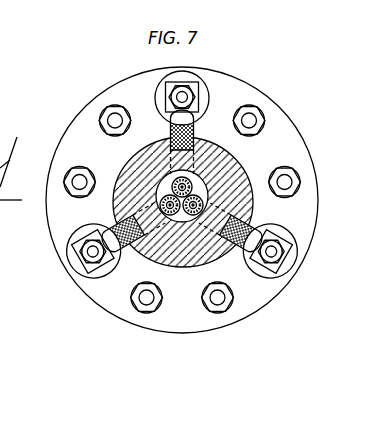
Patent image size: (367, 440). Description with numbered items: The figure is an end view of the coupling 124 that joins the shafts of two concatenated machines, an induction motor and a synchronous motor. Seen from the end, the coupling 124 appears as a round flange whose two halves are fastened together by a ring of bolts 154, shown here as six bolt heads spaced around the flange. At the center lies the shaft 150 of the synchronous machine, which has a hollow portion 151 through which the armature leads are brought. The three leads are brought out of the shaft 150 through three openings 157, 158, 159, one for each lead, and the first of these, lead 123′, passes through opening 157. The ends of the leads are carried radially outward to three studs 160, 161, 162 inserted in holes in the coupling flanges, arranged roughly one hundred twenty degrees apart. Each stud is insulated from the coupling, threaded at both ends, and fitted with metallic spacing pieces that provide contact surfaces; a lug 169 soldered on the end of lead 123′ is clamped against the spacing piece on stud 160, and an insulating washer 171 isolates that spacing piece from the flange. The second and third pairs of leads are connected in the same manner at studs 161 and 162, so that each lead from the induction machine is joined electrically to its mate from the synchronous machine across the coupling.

The coupling 124 is at (302, 100).
The bolts 154 is at (265, 123).
The stud 160 is at (167, 82).
The stud 161 is at (90, 251).
The stud 162 is at (286, 250).
The lug 169 is at (168, 112).
The insulating washer 171 is at (197, 77).
The opening 157 is at (196, 166).
The hollow portion 151 is at (202, 199).
The opening 158 is at (150, 230).
The opening 159 is at (214, 237).
The shaft 150 is at (199, 244).
The lead 123′ is at (173, 133).